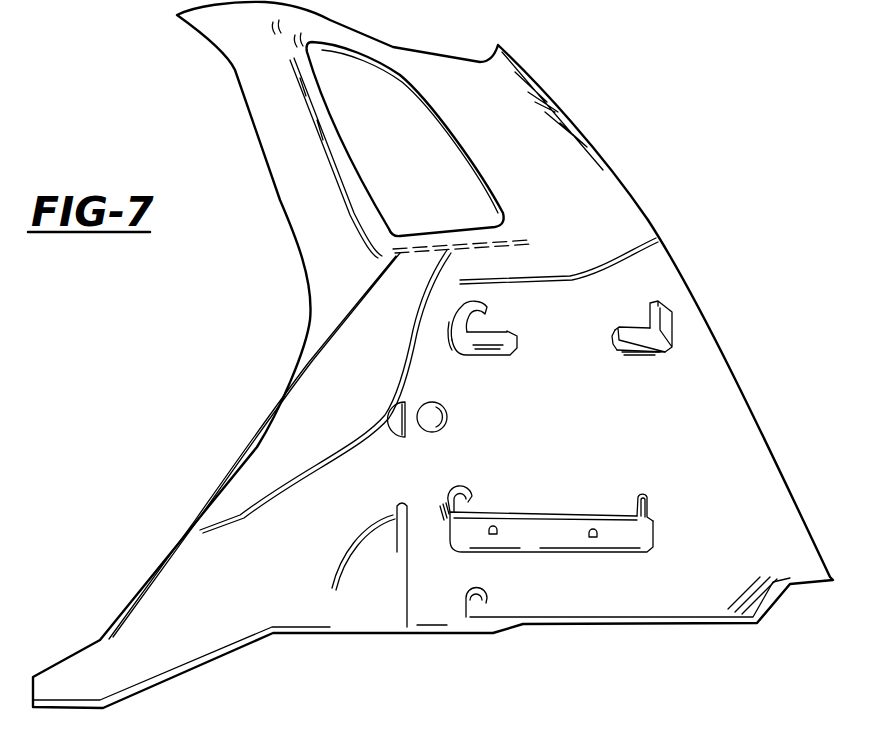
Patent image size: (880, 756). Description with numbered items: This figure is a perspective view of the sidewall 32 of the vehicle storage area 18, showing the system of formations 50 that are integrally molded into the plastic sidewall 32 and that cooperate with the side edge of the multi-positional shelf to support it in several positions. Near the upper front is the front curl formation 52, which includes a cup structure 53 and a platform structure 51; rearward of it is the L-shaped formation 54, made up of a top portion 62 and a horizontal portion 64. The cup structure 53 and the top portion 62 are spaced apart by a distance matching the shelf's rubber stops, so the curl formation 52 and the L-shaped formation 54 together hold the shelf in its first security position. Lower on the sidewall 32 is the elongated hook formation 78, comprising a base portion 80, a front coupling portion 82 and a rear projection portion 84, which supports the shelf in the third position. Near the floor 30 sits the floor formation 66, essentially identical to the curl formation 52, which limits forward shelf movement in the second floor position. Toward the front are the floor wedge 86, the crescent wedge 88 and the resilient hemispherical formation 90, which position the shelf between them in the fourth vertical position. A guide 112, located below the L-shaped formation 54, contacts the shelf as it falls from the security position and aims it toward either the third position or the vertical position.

The storage area 18 is at (586, 461).
The floor 30 is at (658, 625).
The sidewall 32 is at (742, 544).
The formations 50 is at (490, 350).
The platform structure 51 is at (512, 355).
The front curl formation 52 is at (475, 288).
The cup structure 53 is at (462, 299).
The L-shaped formation 54 is at (649, 306).
The top portion 62 is at (660, 310).
The horizontal portion 64 is at (620, 327).
The floor formation 66 is at (466, 592).
The hook formation 78 is at (532, 486).
The base portion 80 is at (503, 512).
The front coupling portion 82 is at (452, 490).
The rear projection portion 84 is at (655, 500).
The floor wedge 86 is at (397, 535).
The crescent wedge 88 is at (397, 410).
The hemispherical formation 90 is at (430, 406).
The guide 112 is at (612, 345).